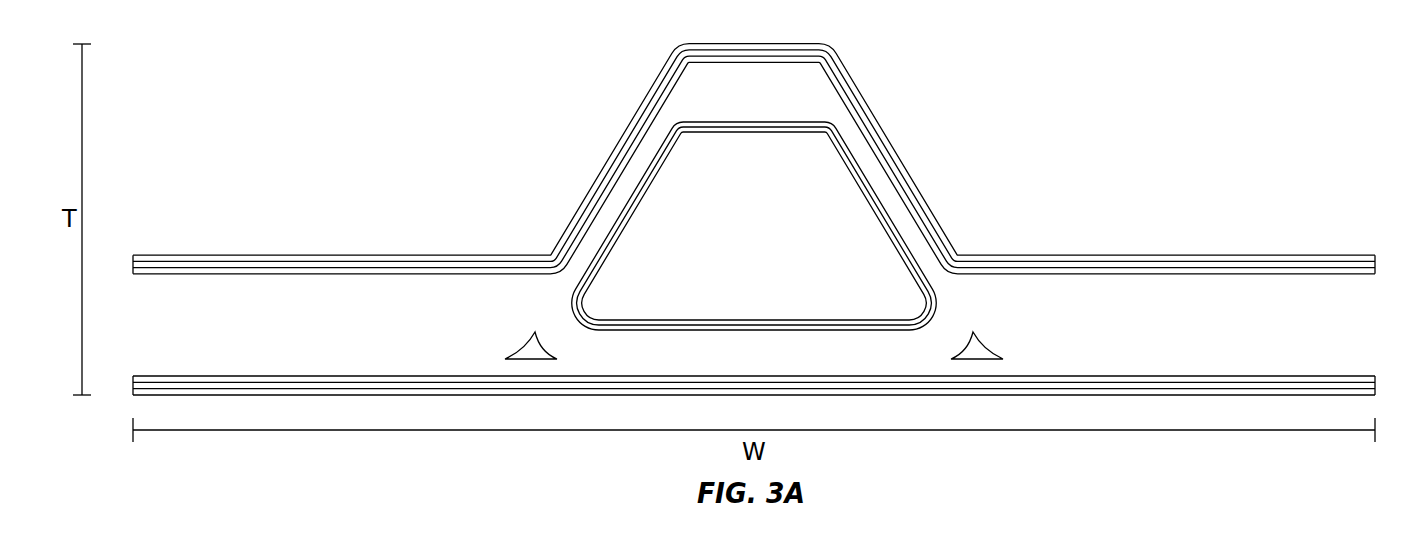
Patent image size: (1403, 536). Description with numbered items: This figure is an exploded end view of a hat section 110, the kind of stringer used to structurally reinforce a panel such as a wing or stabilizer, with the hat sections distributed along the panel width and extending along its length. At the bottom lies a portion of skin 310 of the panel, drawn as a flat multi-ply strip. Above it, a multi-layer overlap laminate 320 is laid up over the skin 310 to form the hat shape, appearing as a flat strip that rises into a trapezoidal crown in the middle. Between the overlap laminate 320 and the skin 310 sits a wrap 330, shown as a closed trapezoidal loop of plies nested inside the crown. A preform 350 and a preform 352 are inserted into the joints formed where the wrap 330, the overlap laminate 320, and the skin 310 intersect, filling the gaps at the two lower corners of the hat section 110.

The hat section 110 is at (439, 86).
The skin 310 is at (1290, 375).
The overlap laminate 320 is at (1257, 255).
The wrap 330 is at (888, 243).
The preform 350 is at (990, 345).
The preform 352 is at (522, 344).